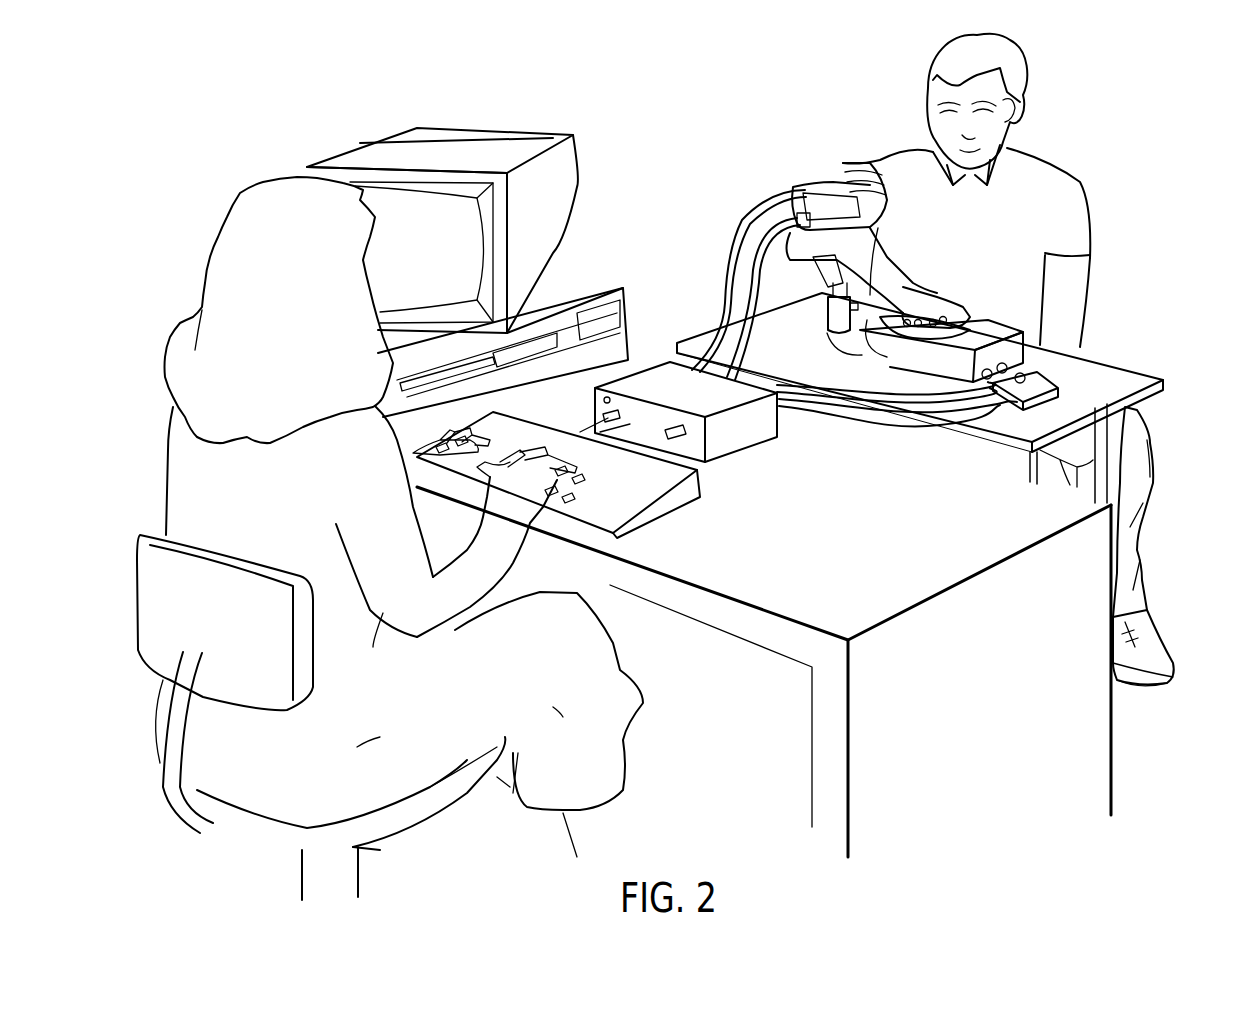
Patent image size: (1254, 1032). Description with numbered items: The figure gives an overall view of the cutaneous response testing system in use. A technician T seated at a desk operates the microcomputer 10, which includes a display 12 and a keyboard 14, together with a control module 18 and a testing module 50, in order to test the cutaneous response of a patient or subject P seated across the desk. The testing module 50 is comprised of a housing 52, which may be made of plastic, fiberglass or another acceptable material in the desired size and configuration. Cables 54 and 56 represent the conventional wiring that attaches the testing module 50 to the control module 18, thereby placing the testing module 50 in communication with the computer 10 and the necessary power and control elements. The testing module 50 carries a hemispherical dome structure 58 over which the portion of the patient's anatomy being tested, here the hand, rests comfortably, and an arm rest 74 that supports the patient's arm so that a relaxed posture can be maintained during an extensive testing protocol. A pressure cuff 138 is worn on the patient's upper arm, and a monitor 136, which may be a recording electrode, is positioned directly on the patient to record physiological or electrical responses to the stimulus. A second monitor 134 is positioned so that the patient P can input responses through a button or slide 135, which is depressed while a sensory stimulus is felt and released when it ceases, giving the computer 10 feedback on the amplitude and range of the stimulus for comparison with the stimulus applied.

The microcomputer 10 is at (482, 251).
The monitor / display 12 is at (532, 217).
The keyboard 14 is at (660, 505).
The control module 18 is at (697, 399).
The testing module 50 is at (899, 322).
The housing 52 is at (953, 373).
The cable 54 is at (823, 377).
The cable 56 is at (807, 400).
The hemispherical dome structure 58 is at (893, 355).
The arm rest 74 is at (827, 313).
The monitor 134 is at (1114, 361).
The button or slide 135 is at (1025, 375).
The monitor 136 is at (810, 217).
The pressure cuff 138 is at (837, 188).
The technician T is at (167, 328).
The patient or subject P is at (1097, 180).